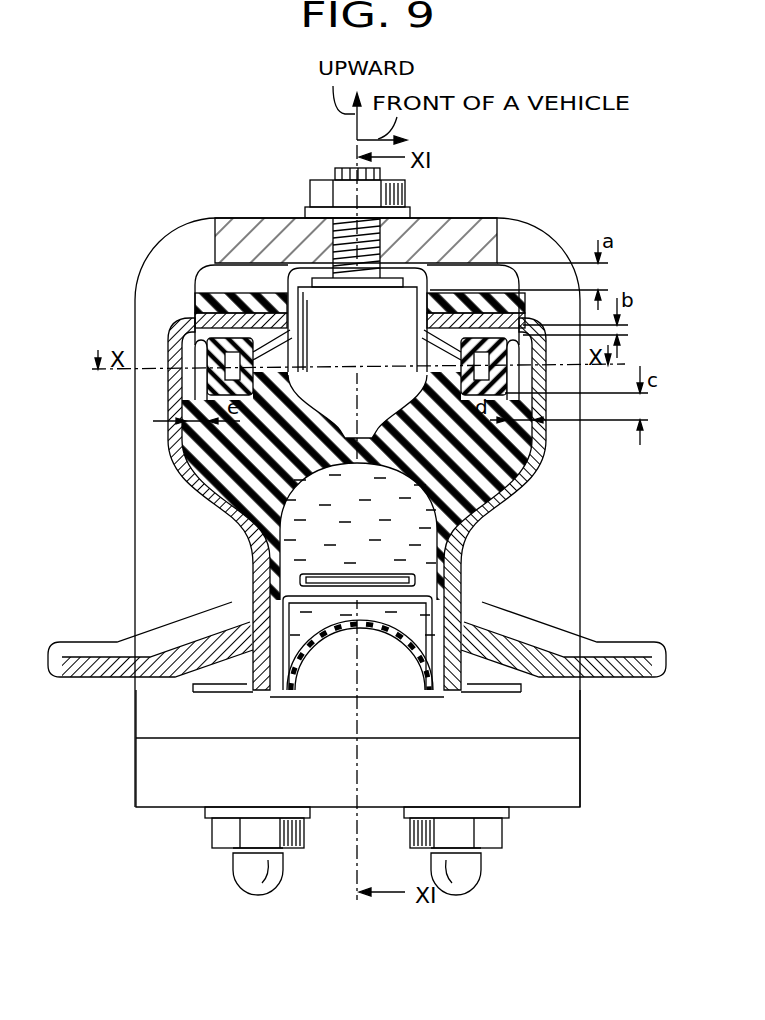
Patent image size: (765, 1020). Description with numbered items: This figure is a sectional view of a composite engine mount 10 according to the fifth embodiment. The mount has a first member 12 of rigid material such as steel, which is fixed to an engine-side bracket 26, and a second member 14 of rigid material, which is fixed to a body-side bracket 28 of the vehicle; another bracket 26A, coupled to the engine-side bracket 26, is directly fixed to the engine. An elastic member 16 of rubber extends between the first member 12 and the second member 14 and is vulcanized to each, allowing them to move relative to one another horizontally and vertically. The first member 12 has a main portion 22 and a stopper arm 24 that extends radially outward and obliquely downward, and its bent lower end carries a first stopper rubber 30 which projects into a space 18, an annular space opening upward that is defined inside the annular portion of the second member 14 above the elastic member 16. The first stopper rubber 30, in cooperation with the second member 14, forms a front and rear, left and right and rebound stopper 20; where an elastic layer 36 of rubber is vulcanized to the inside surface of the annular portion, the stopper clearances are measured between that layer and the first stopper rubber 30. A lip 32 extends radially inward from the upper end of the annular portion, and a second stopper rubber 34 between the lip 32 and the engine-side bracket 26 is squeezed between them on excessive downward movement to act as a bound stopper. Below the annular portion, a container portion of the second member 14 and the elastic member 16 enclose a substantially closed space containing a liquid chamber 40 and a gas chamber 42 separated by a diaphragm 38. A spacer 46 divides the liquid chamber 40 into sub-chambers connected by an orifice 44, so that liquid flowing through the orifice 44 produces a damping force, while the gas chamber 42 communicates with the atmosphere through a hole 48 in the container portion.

The composite engine mount 10 is at (532, 488).
The first member 12 is at (327, 330).
The second member 14 is at (532, 490).
The elastic member 16 is at (178, 472).
The space 18 is at (503, 292).
The front and rear, left and right and rebound stopper 20 is at (197, 397).
The main portion 22 is at (393, 297).
The stopper arm 24 is at (457, 293).
The engine-side bracket 26 is at (573, 710).
The another bracket 26A is at (558, 768).
The body-side bracket 28 is at (82, 640).
The first stopper rubber 30 is at (185, 322).
The lip 32 is at (232, 330).
The second stopper rubber 34 is at (467, 295).
The elastic layer 36 is at (183, 334).
The diaphragm 38 is at (353, 622).
The liquid chamber 40 is at (247, 557).
The gas chamber 42 is at (340, 682).
The orifice 44 is at (445, 592).
The spacer 46 is at (447, 550).
The hole 48 is at (398, 700).